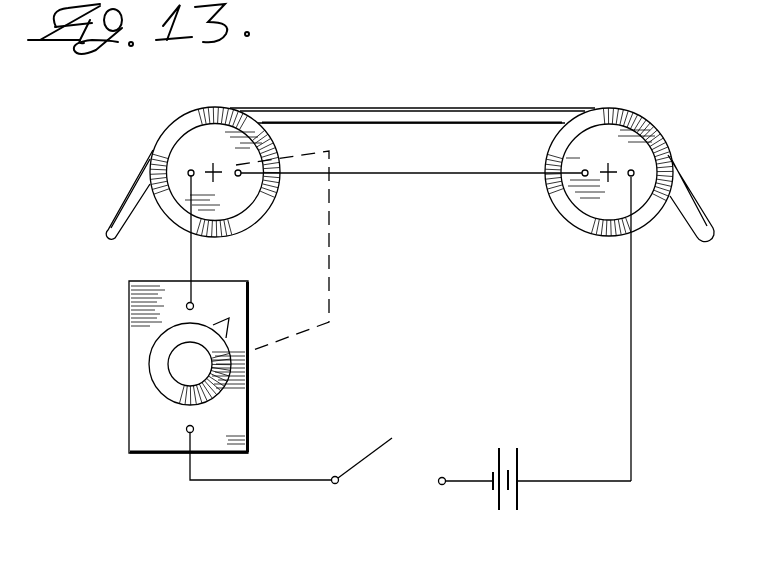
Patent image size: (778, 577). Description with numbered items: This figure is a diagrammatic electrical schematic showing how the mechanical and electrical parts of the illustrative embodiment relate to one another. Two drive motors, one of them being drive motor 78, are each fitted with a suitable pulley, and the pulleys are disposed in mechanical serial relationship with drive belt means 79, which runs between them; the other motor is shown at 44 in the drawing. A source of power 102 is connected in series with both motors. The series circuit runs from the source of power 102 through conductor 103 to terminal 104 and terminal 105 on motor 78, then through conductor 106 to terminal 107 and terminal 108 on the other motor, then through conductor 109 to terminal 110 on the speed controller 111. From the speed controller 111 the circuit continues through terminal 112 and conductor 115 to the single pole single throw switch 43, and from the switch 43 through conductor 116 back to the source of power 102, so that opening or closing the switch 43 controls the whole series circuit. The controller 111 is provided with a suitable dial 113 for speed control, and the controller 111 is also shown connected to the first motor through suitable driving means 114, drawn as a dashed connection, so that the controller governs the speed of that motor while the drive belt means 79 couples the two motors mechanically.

The left pulley 44 is at (227, 123).
The drive belt means 79 is at (318, 108).
The drive motor 78 is at (645, 145).
The terminal 108 is at (187, 171).
The terminal 107 is at (242, 177).
The conductor 106 is at (508, 178).
The terminal 105 is at (583, 177).
The terminal 104 is at (630, 180).
The conductor 109 is at (192, 265).
The terminal 110 is at (185, 300).
The dial 113 is at (157, 386).
The speed controller 111 is at (240, 397).
The terminal 112 is at (183, 453).
The driving means 114 is at (332, 255).
The conductor 115 is at (290, 482).
The single pole single throw switch 43 is at (396, 441).
The conductor 116 is at (468, 482).
The source of power 102 is at (512, 516).
The conductor 103 is at (632, 432).